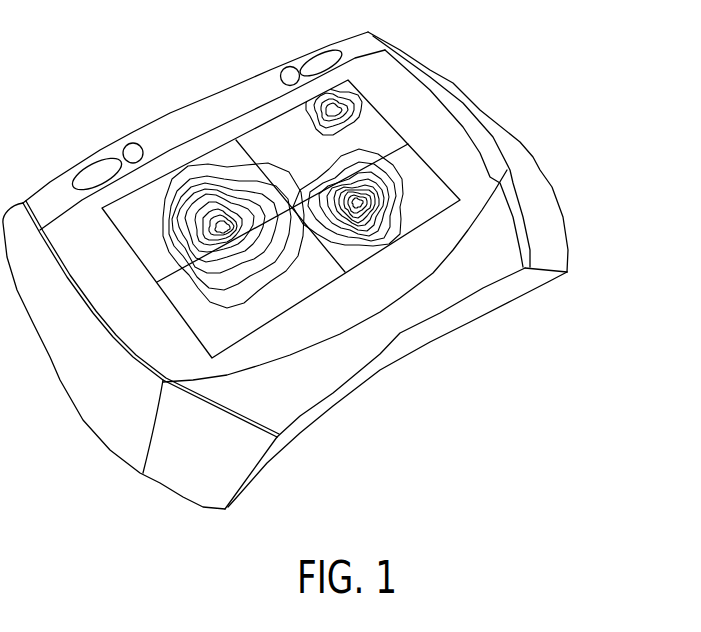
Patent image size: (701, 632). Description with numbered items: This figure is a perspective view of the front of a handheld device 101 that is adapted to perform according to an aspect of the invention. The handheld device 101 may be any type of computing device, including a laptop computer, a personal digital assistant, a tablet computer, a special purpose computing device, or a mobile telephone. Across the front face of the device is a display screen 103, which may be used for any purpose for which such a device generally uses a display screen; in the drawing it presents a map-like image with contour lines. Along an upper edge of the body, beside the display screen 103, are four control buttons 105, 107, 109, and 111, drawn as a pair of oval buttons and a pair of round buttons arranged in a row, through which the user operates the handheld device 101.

The handheld device 101 is at (562, 217).
The display screen 103 is at (437, 175).
The control button 105 is at (84, 170).
The control button 107 is at (124, 144).
The control button 109 is at (288, 66).
The control button 111 is at (333, 53).